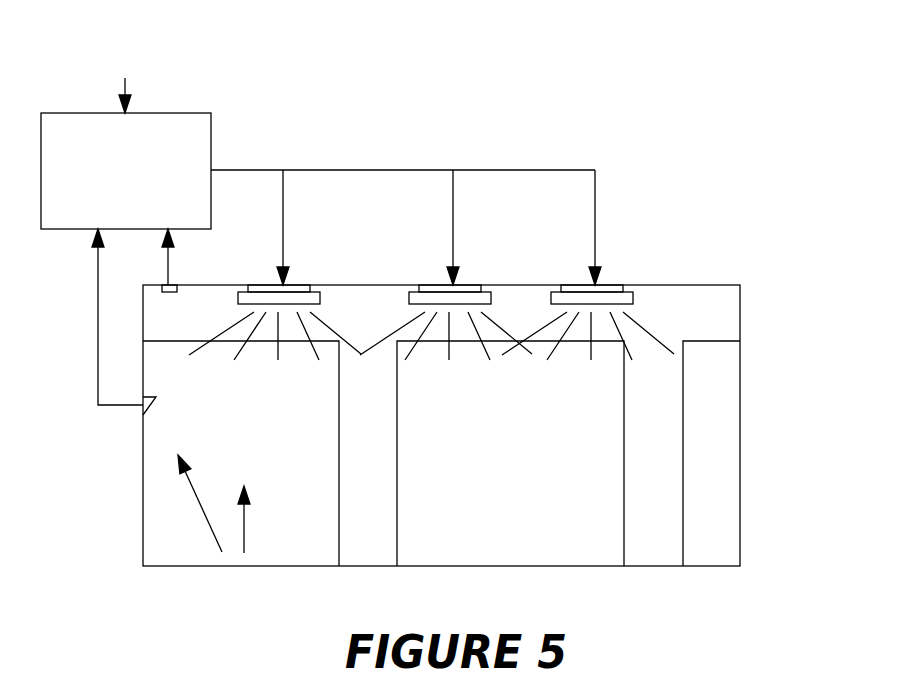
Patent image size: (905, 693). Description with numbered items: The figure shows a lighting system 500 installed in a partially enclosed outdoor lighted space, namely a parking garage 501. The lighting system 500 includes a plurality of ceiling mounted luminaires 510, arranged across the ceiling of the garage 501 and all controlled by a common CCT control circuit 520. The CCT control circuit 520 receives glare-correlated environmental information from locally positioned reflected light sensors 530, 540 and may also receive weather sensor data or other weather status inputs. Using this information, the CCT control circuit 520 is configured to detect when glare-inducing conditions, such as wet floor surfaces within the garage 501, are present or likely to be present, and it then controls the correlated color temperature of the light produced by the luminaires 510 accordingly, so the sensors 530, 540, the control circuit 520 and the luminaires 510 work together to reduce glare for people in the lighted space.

The lighting system 500 is at (738, 150).
The parking garage 501 is at (707, 567).
The ceiling mounted luminaires 510 is at (307, 285).
The CCT control circuit 520 is at (178, 113).
The reflected light sensor 530 is at (168, 292).
The reflected light sensor 540 is at (149, 396).